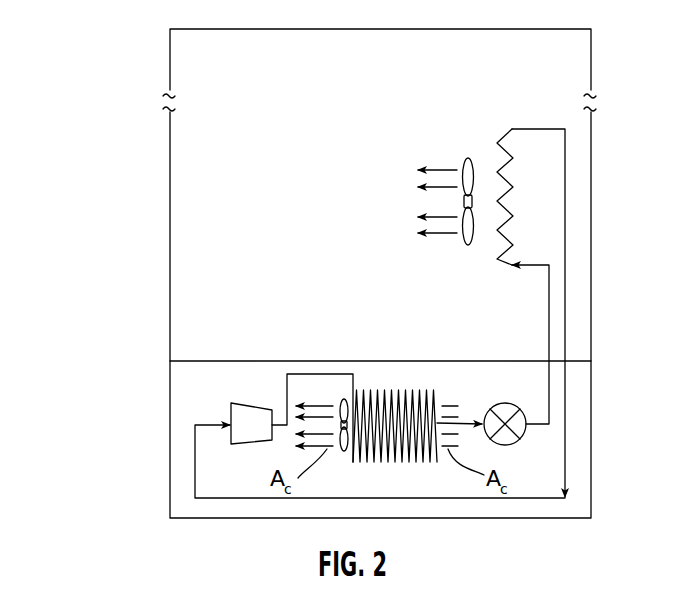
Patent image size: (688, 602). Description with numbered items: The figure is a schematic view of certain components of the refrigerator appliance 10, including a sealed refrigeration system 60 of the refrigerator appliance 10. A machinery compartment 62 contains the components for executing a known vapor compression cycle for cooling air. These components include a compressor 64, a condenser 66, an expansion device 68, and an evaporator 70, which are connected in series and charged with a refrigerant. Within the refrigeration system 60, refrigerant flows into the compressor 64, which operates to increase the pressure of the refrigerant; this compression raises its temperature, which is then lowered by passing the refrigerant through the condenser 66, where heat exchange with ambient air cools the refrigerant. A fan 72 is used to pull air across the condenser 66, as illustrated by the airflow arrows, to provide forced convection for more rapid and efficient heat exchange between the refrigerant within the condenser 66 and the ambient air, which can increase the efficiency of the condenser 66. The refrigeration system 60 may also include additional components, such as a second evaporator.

The refrigerator appliance 10 is at (112, 148).
The sealed refrigeration system 60 is at (372, 350).
The machinery compartment 62 is at (205, 389).
The compressor 64 is at (252, 408).
The condenser 66 is at (410, 390).
The expansion device 68 is at (500, 405).
The evaporator 70 is at (497, 163).
The fan 72 is at (342, 407).